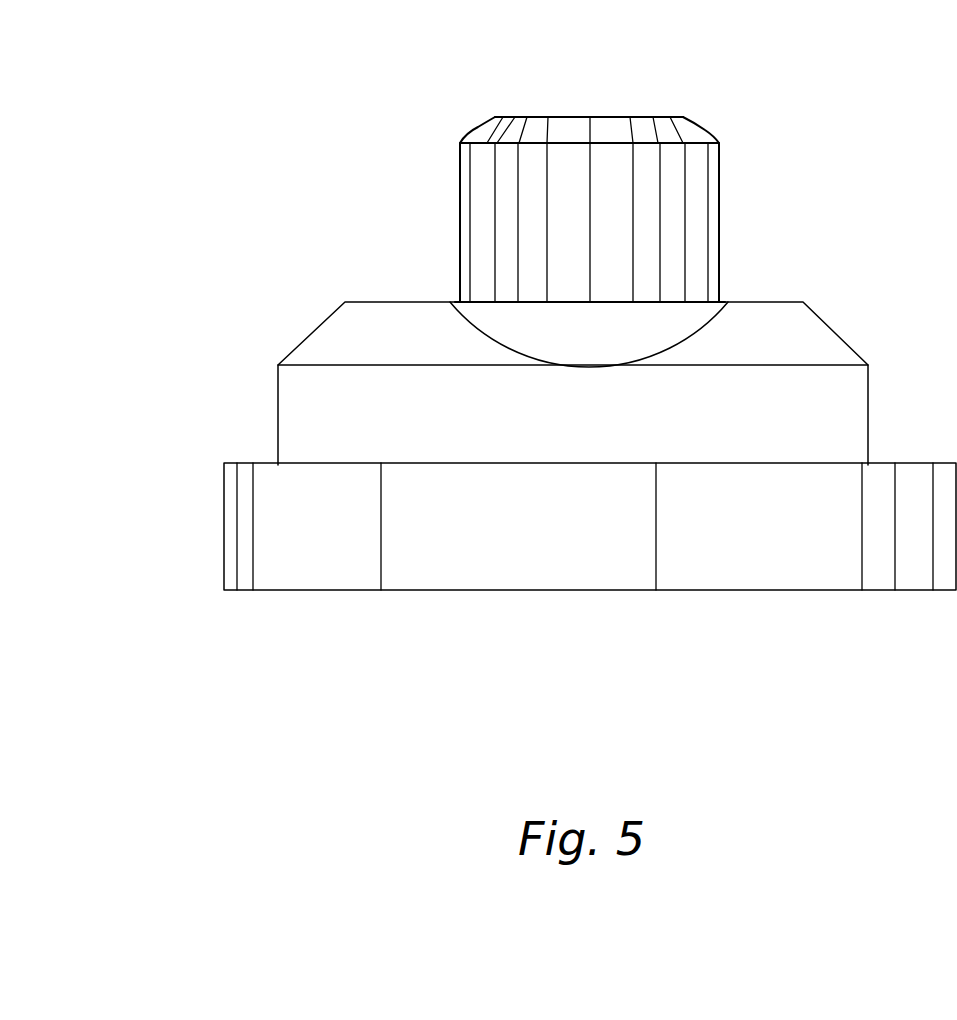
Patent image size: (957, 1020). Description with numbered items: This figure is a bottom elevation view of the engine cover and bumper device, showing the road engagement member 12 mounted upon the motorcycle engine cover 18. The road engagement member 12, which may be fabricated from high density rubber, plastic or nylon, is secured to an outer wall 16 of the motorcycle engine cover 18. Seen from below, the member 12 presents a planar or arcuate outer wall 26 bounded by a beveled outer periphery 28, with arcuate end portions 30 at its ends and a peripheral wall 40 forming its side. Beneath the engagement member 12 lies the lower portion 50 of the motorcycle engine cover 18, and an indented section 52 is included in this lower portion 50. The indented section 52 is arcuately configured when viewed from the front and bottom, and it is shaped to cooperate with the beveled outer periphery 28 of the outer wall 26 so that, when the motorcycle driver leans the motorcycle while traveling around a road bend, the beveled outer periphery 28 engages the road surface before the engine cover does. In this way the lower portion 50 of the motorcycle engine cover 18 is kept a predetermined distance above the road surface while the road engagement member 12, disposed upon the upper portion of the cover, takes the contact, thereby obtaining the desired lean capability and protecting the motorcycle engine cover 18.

The road engagement member 12 is at (485, 212).
The outer wall 16 is at (757, 300).
The motorcycle engine cover 18 is at (263, 460).
The outer wall 26 is at (573, 116).
The beveled outer periphery 28 is at (687, 136).
The arcuate end portions 30 is at (460, 242).
The peripheral wall 40 is at (460, 173).
The lower portion 50 is at (595, 390).
The indented section 52 is at (670, 327).